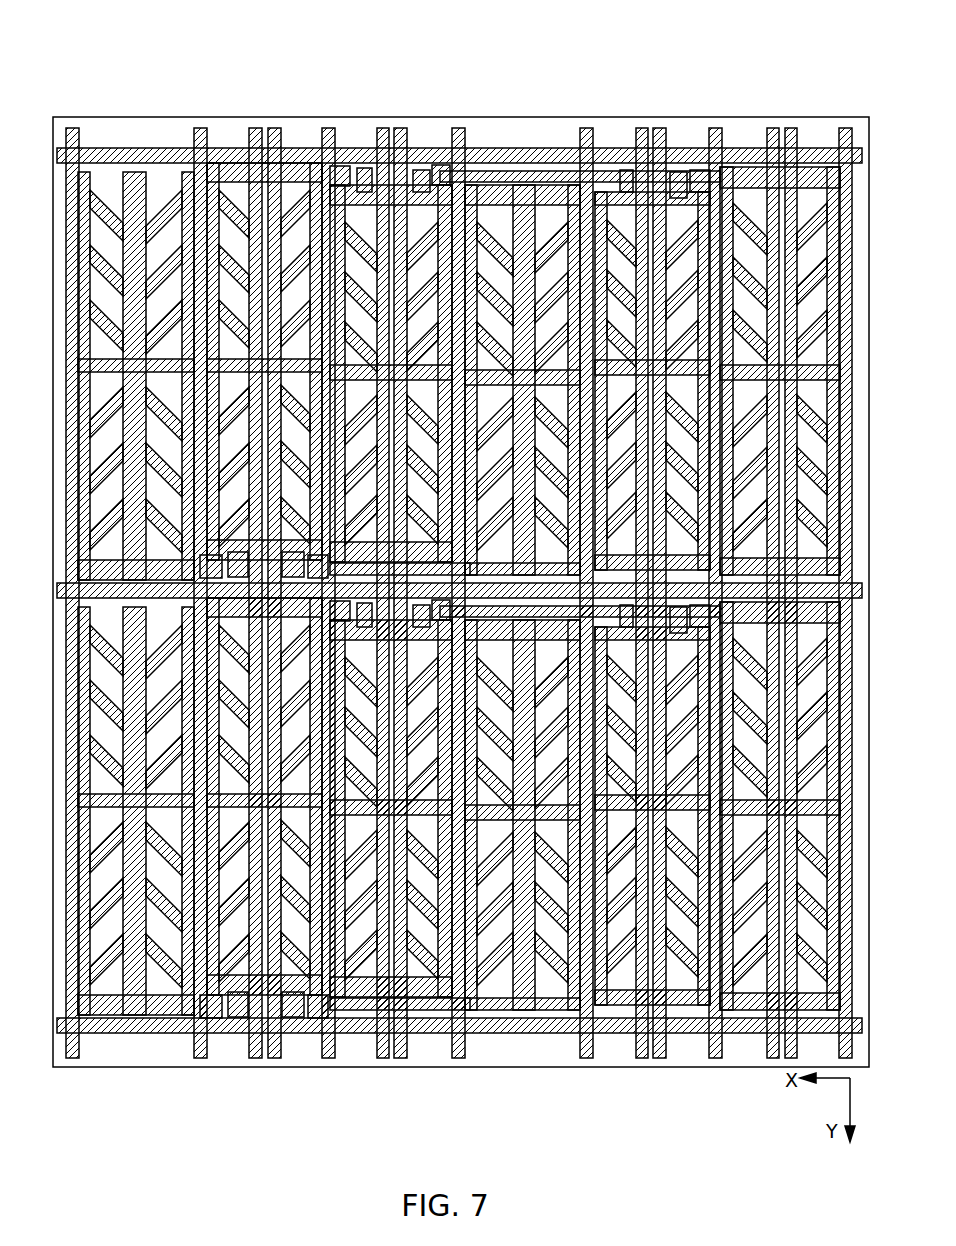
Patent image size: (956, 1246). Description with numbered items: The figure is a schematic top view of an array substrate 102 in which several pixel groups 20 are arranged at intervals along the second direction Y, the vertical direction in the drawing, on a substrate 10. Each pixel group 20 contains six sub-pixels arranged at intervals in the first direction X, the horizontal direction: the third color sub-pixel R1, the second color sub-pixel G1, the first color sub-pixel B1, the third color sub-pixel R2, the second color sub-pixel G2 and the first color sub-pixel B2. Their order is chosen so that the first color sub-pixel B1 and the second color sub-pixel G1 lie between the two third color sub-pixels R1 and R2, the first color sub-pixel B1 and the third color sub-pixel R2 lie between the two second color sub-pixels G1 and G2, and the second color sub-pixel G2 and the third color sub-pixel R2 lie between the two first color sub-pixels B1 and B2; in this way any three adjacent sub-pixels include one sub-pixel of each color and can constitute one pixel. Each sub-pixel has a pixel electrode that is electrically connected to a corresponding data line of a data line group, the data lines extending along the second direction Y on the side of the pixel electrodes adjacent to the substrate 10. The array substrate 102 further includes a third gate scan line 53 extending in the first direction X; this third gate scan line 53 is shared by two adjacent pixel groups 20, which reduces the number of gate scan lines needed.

The array substrate 102 is at (186, 40).
The substrate 10 is at (844, 119).
The pixel group 20 is at (750, 68).
The third gate scan line 53 is at (101, 148).
The third color sub-pixel R1 is at (164, 210).
The second color sub-pixel G1 is at (277, 208).
The first color sub-pixel B1 is at (369, 208).
The third color sub-pixel R2 is at (516, 208).
The second color sub-pixel G2 is at (631, 208).
The first color sub-pixel B2 is at (777, 208).